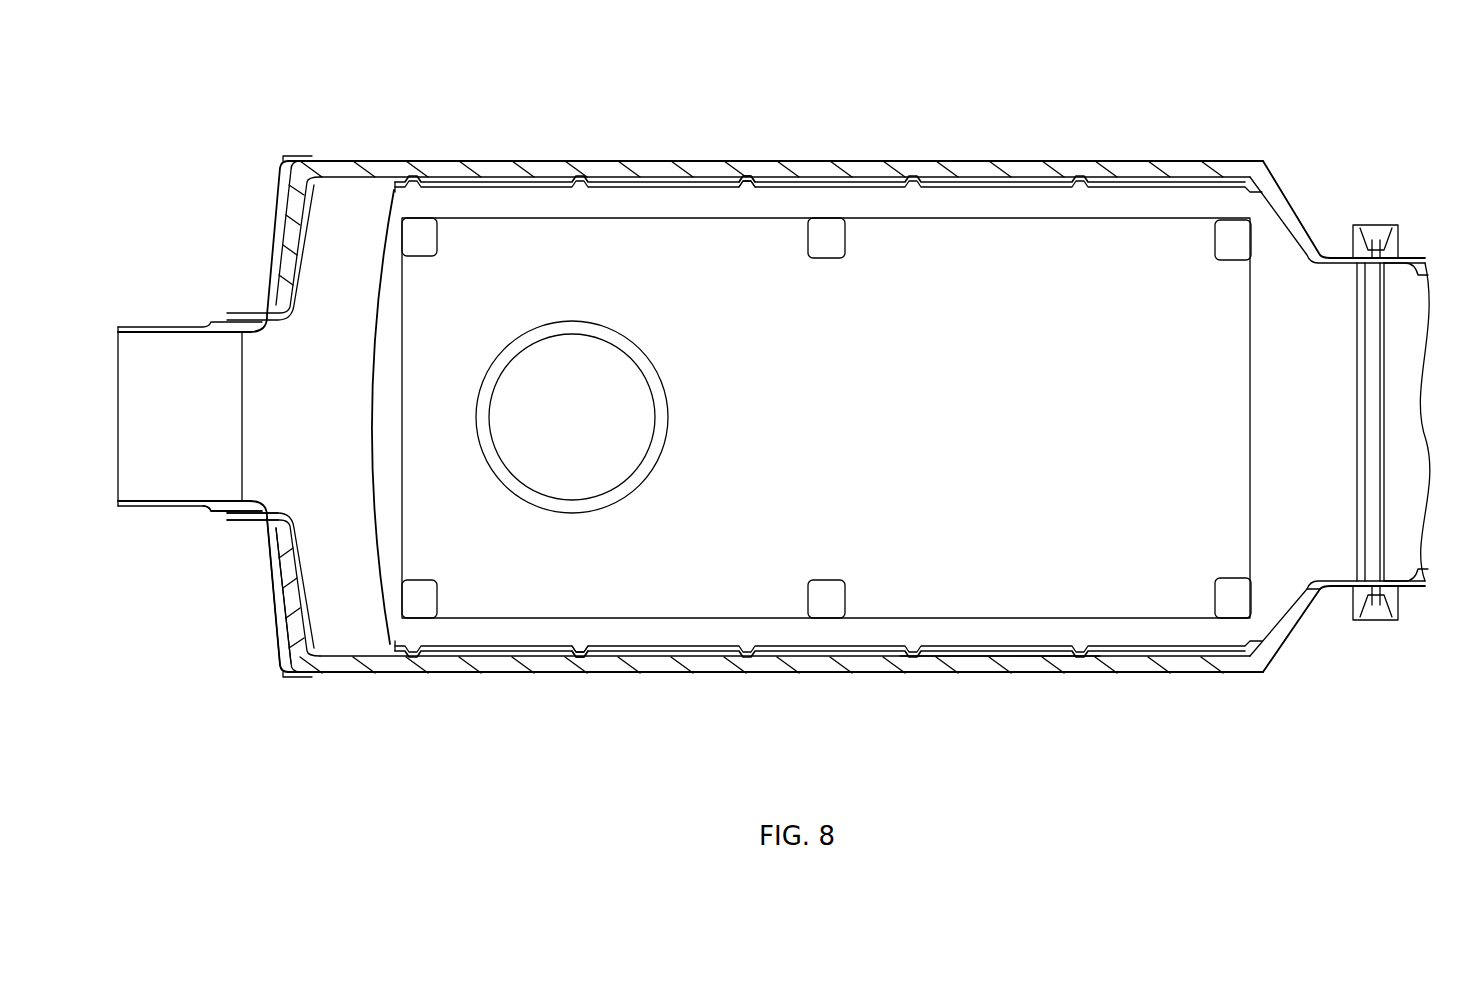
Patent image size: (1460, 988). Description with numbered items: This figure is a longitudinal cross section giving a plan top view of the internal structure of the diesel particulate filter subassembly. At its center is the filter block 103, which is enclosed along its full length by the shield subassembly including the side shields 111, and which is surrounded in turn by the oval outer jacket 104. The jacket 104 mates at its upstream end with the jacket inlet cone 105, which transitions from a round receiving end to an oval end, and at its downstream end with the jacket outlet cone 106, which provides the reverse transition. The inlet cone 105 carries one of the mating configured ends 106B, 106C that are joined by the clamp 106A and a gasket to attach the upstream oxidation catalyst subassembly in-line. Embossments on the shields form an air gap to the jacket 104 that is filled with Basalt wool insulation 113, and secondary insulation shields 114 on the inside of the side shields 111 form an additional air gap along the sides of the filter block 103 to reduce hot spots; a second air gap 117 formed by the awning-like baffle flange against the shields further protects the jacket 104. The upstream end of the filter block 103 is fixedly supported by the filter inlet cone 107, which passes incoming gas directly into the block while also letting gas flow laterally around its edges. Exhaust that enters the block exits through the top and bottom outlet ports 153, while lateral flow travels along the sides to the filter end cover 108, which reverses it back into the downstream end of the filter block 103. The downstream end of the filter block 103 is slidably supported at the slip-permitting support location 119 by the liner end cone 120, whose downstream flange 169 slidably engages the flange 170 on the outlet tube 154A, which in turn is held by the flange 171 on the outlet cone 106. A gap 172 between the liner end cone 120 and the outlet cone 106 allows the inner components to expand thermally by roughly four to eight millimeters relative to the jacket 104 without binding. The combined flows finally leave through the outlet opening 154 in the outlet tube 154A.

The filter block 103 is at (1160, 222).
The outer jacket 104 is at (627, 161).
The jacket inlet cone 105 is at (1267, 677).
The jacket outlet cone 106 is at (280, 678).
The clamp 106A is at (1377, 225).
The mating configured end 106B is at (1343, 592).
The mating configured end 106C is at (1407, 597).
The filter inlet cone 107 is at (1330, 575).
The filter end cover 108 is at (385, 637).
The side shield 111 is at (825, 172).
The Basalt wool insulation 113 is at (810, 665).
The secondary insulation shield 114 is at (732, 190).
The second air gap 117 is at (980, 657).
The slip-permitting support location 119 is at (219, 529).
The liner end cone 120 is at (300, 510).
The outlet port 153 is at (584, 470).
The outlet opening 154 is at (135, 352).
The outlet tube 154A is at (174, 327).
The downstream flange 169 is at (216, 501).
The flange 170 is at (222, 508).
The flange 171 is at (238, 522).
The gap 172 is at (288, 657).